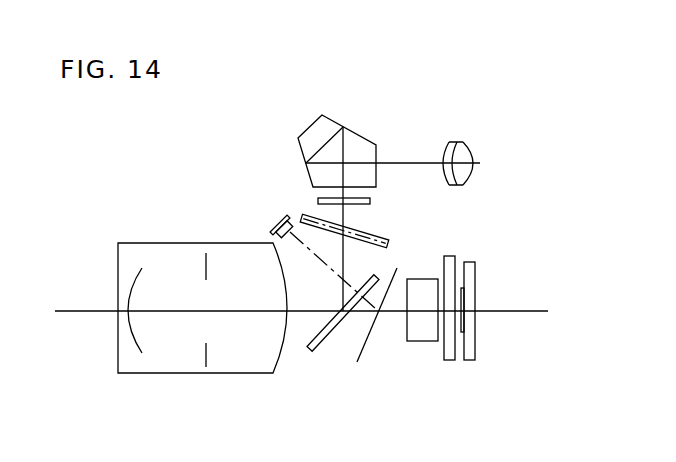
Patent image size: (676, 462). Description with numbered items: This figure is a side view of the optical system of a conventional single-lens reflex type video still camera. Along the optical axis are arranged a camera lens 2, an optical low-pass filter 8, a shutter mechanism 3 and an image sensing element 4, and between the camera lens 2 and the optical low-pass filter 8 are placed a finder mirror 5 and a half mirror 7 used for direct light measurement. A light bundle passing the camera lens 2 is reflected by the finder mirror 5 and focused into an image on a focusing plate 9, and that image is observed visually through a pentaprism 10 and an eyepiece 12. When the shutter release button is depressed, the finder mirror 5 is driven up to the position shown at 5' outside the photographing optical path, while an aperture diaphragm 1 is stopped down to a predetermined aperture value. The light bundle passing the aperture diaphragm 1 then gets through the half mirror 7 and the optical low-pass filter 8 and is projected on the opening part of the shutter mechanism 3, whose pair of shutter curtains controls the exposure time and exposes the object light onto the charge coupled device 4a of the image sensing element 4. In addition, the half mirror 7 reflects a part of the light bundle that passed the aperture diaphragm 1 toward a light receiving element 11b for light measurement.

The aperture diaphragm 1 is at (205, 256).
The camera lens 2 is at (143, 347).
The shutter mechanism 3 is at (450, 360).
The image sensing element 4 is at (475, 270).
The charge coupled device 4a is at (463, 327).
The finder mirror 5 is at (343, 332).
The raised position of finder mirror 5' is at (363, 216).
The half mirror 7 is at (361, 351).
The optical low-pass filter 8 is at (422, 279).
The focusing plate 9 is at (318, 201).
The pentaprism 10 is at (315, 125).
The light receiving element 11b is at (272, 222).
The eyepiece 12 is at (463, 143).